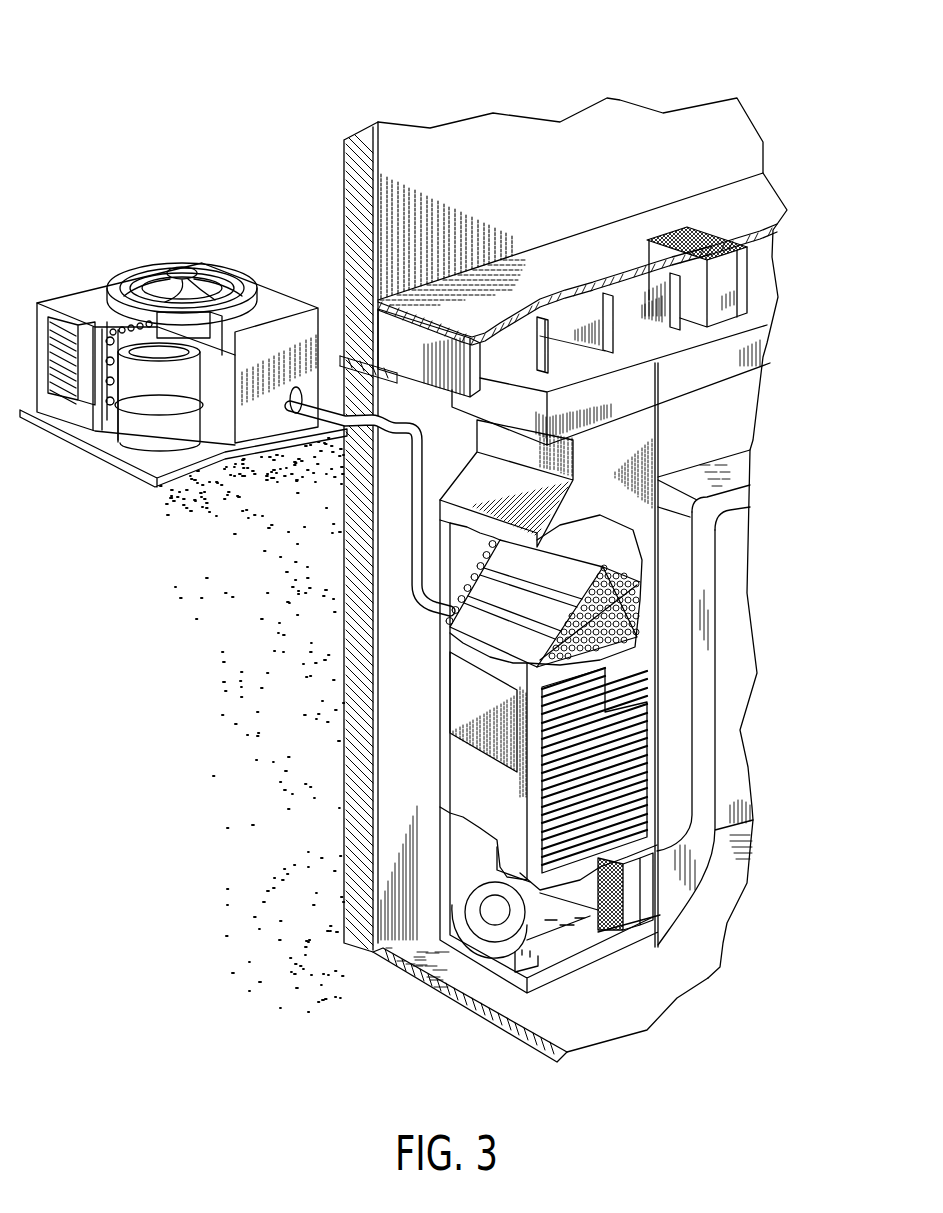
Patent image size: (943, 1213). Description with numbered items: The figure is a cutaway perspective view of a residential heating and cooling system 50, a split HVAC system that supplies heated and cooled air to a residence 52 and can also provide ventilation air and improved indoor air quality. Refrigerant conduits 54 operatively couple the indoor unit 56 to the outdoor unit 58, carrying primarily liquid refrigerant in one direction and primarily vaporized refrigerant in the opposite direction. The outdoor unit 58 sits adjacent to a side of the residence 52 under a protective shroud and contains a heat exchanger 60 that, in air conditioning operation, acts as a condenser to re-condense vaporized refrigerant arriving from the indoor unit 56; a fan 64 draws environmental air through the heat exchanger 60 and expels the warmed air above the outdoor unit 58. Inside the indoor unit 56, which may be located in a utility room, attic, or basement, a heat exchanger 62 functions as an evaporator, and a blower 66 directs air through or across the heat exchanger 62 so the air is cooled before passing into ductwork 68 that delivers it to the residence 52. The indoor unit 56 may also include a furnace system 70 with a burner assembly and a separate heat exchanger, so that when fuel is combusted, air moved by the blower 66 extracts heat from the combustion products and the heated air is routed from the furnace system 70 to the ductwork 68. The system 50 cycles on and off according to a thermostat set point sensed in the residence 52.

The residential heating and cooling system 50 is at (176, 90).
The residence 52 is at (476, 145).
The refrigerant conduits 54 is at (412, 510).
The indoor unit 56 is at (443, 721).
The outdoor unit 58 is at (183, 330).
The heat exchanger 60 is at (95, 327).
The heat exchanger 62 is at (500, 627).
The fan 64 is at (197, 265).
The blower 66 is at (487, 935).
The ductwork 68 is at (700, 363).
The furnace system 70 is at (452, 705).